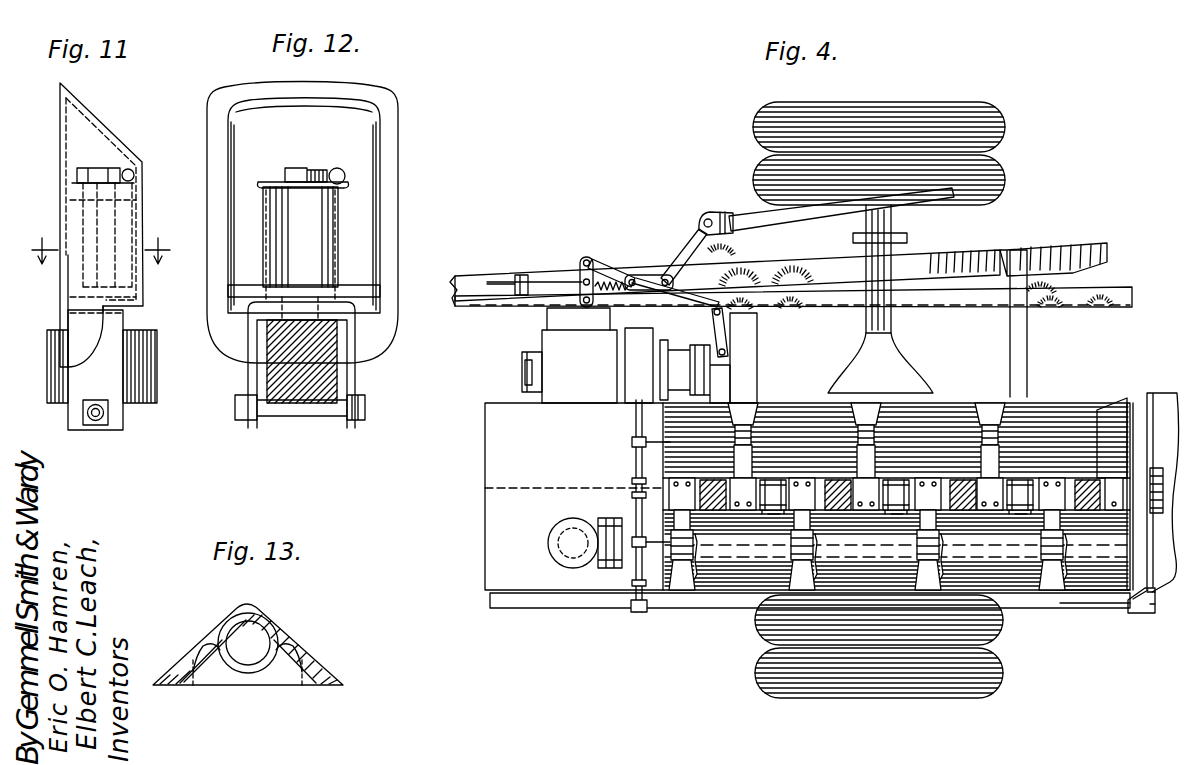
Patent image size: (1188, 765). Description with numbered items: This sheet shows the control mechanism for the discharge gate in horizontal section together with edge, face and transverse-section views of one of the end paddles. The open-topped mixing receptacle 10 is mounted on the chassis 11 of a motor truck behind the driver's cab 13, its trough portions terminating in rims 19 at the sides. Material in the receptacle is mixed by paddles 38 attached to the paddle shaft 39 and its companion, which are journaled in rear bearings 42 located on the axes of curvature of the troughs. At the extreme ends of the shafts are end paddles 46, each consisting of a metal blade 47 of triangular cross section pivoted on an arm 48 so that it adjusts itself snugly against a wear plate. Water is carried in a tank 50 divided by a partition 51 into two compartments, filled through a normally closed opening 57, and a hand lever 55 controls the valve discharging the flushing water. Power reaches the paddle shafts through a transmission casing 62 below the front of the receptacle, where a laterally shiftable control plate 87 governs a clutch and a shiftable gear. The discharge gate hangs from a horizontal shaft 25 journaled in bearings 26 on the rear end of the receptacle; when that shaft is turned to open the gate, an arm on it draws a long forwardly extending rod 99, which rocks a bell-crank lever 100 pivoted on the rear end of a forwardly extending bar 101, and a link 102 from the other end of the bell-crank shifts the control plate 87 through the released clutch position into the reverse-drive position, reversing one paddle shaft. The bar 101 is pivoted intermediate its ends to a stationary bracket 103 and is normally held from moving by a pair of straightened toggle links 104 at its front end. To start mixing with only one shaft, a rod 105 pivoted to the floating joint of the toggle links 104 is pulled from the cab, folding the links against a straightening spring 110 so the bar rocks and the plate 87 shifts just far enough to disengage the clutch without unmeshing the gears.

In FIG. 4, the mixing receptacle 10 is at (707, 608).
In FIG. 4, the chassis 11 is at (791, 276).
In FIG. 11, the driver's cab 13 is at (104, 250).
In FIG. 4, the rims 19 is at (1082, 597).
In FIG. 4, the horizontal shaft 25 is at (1140, 612).
In FIG. 4, the bearings 26 is at (1150, 613).
In FIG. 4, the paddles 38 is at (913, 563).
In FIG. 11, the shaft 39 is at (145, 398).
In FIG. 12, the shaft 39 is at (297, 385).
In FIG. 4, the shaft 39 is at (734, 512).
In FIG. 4, the rear bearings 42 is at (1157, 472).
In FIG. 11, the end paddles 46 is at (60, 138).
In FIG. 12, the end paddles 46 is at (398, 155).
In FIG. 13, the end paddles 46 is at (302, 650).
In FIG. 4, the end paddles 46 is at (1107, 442).
In FIG. 11, the metal blades 47 is at (107, 150).
In FIG. 12, the metal blades 47 is at (367, 194).
In FIG. 13, the metal blades 47 is at (216, 642).
In FIG. 11, the arms 48 is at (127, 270).
In FIG. 12, the arms 48 is at (336, 243).
In FIG. 4, the tank 50 is at (485, 546).
In FIG. 4, the partition 51 is at (543, 487).
In FIG. 4, the hand lever 55 is at (648, 518).
In FIG. 4, the opening 57 is at (548, 533).
In FIG. 4, the transmission casing 62 is at (548, 340).
In FIG. 4, the control plate 87 is at (691, 358).
In FIG. 4, the rod 99 is at (762, 223).
In FIG. 4, the bell-crank lever 100 is at (687, 252).
In FIG. 4, the bar 101 is at (648, 272).
In FIG. 4, the link 102 is at (712, 328).
In FIG. 4, the stationary bracket 103 is at (612, 273).
In FIG. 4, the toggle links 104 is at (577, 272).
In FIG. 4, the rod 105 is at (537, 280).
In FIG. 4, the straightening spring 110 is at (605, 290).